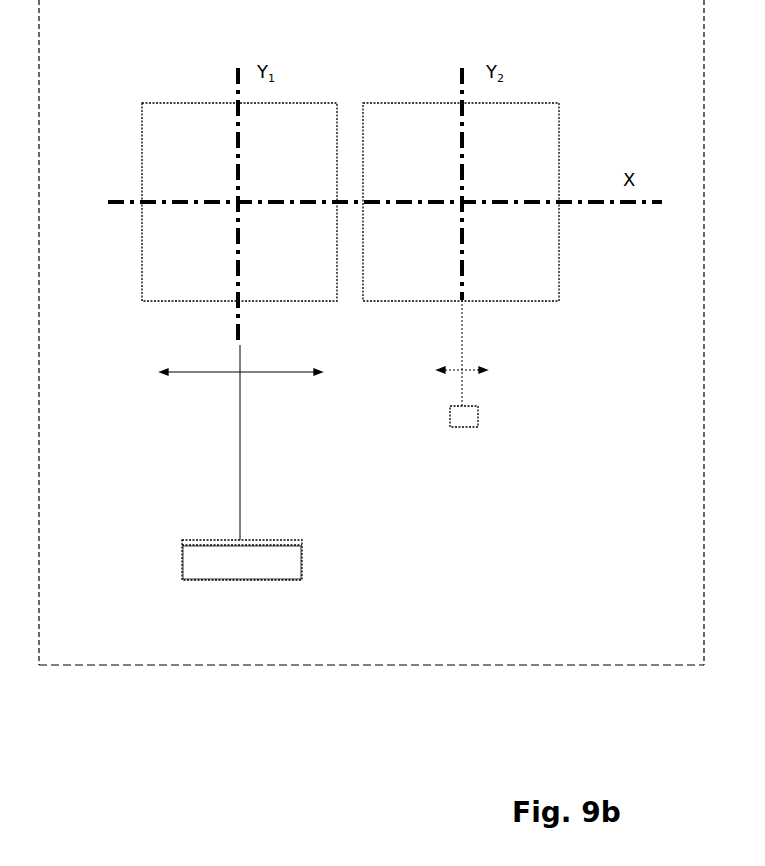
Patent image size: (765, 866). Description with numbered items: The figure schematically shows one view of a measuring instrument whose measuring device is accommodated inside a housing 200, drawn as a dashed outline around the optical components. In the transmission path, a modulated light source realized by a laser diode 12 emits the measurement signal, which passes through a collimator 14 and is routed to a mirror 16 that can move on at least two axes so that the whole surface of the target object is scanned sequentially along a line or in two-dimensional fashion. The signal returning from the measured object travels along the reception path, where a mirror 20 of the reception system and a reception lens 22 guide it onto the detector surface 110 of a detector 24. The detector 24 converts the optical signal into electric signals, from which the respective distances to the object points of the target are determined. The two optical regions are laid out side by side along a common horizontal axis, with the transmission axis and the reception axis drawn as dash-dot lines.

The optical module housing 200 is at (404, 646).
The reception lens aperture region 20 is at (168, 118).
The collimator aperture region 16 is at (508, 145).
The reception lens 22 is at (196, 393).
The collimator 14 is at (544, 370).
The laser diode 12 is at (448, 427).
The detector unit 110 is at (184, 525).
The detector 24 is at (252, 570).